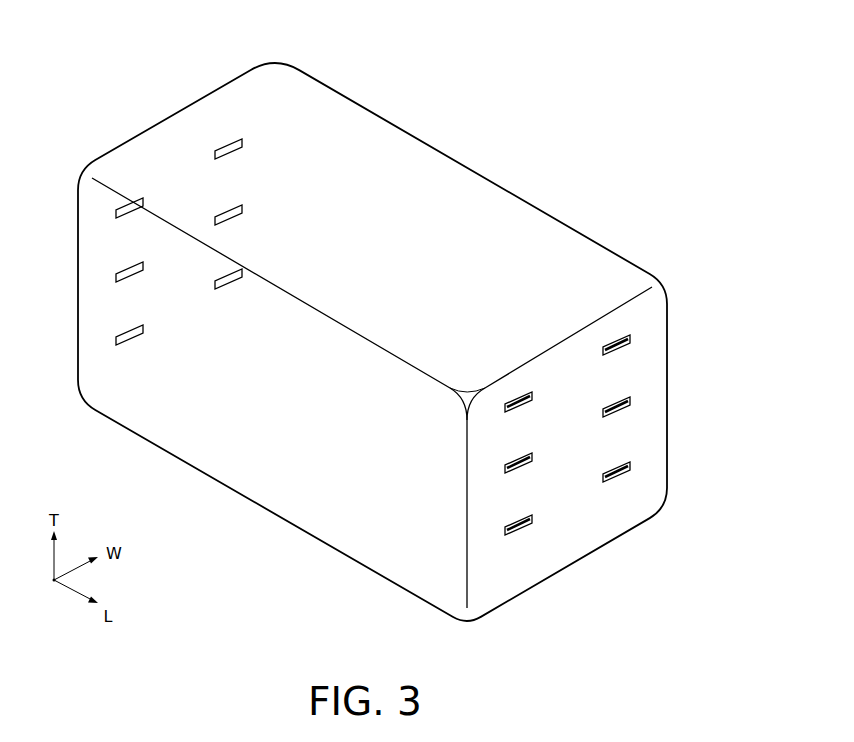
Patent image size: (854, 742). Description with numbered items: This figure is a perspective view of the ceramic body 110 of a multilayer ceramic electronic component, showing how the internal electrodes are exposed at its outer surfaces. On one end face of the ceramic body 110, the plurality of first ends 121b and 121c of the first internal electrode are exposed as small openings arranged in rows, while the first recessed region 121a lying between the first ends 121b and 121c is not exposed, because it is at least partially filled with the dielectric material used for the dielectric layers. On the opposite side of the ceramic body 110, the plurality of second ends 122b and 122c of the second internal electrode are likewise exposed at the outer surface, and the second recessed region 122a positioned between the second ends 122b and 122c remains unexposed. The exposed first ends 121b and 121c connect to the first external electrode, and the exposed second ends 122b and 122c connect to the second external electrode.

The ceramic body 110 is at (527, 187).
The first recessed region 121a is at (578, 365).
The first end 121b is at (505, 375).
The first end 121c is at (626, 334).
The second recessed region 122a is at (177, 180).
The second end 122b is at (127, 200).
The second end 122c is at (227, 137).